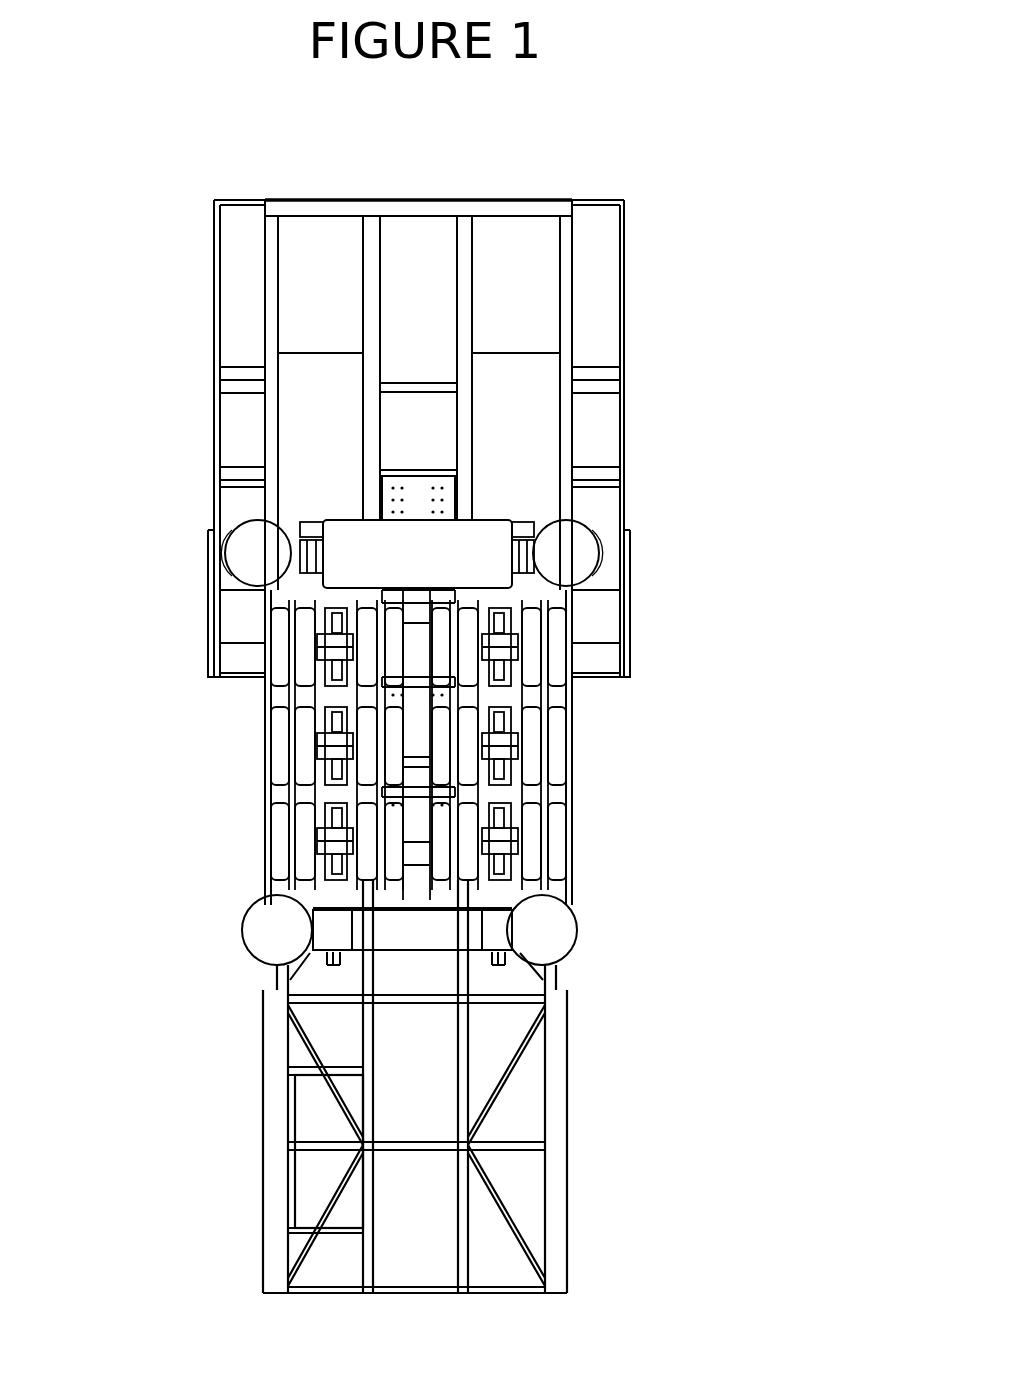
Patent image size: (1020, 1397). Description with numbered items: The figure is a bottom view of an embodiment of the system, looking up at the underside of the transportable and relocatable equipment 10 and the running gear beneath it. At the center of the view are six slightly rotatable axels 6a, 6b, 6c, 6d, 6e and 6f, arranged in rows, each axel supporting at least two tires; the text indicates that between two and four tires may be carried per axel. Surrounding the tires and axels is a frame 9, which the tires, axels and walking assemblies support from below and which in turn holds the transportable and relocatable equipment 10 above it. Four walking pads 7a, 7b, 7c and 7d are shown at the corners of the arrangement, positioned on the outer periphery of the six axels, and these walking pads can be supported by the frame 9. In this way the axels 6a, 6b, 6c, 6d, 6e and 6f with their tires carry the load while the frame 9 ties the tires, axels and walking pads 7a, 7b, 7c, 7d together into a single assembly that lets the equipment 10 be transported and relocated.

The transportable and relocatable equipment 10 is at (567, 217).
The frame 9 is at (360, 533).
The walking pad 7a is at (260, 553).
The walking pad 7b is at (563, 553).
The walking pad 7c is at (278, 930).
The walking pad 7d is at (542, 930).
The slightly rotatable axel 6a is at (500, 840).
The slightly rotatable axel 6b is at (500, 745).
The slightly rotatable axel 6c is at (500, 648).
The slightly rotatable axel 6d is at (333, 648).
The slightly rotatable axel 6e is at (333, 745).
The slightly rotatable axel 6f is at (333, 840).